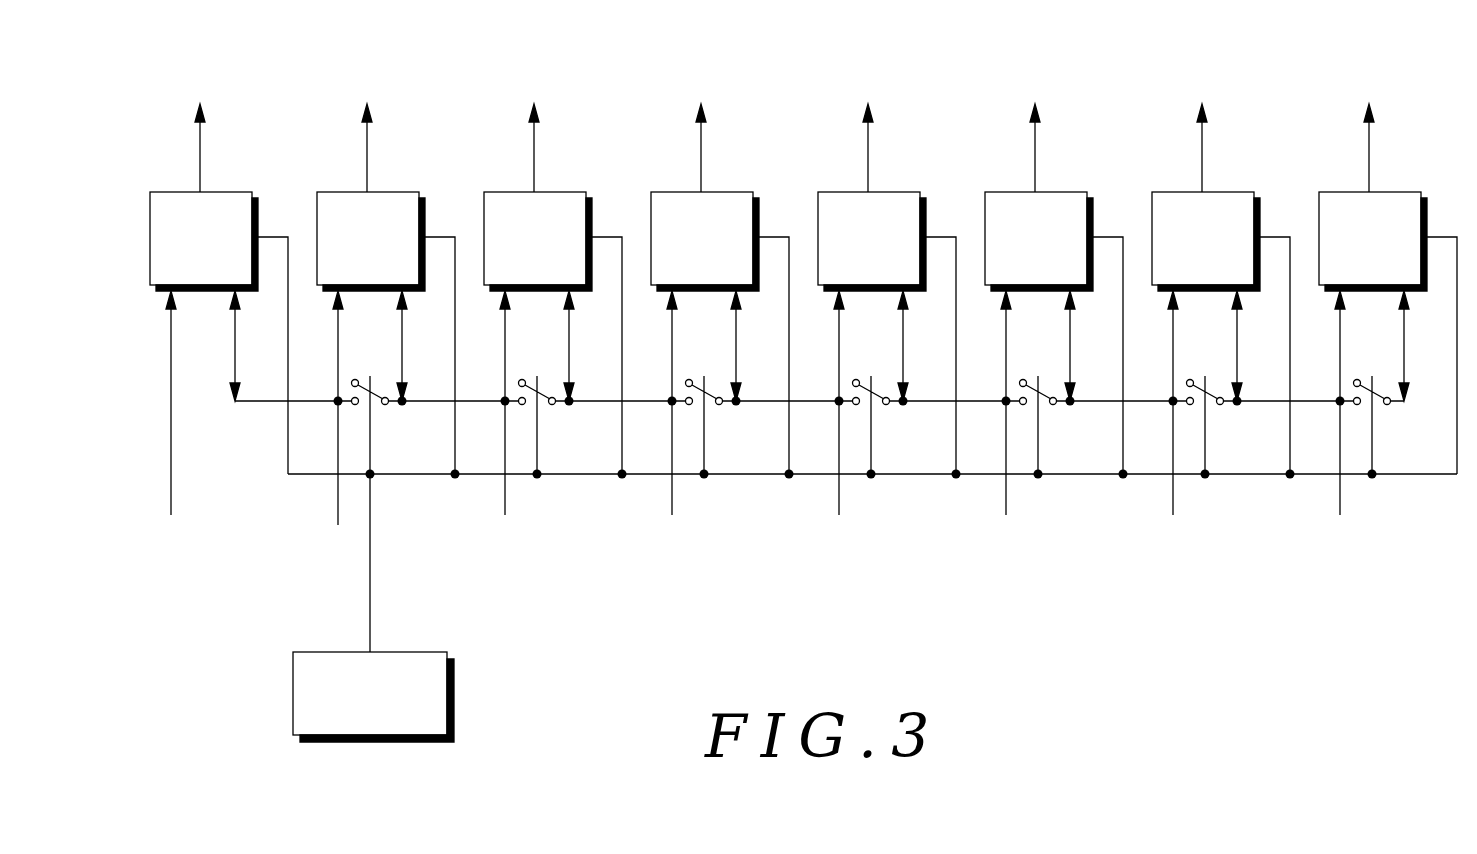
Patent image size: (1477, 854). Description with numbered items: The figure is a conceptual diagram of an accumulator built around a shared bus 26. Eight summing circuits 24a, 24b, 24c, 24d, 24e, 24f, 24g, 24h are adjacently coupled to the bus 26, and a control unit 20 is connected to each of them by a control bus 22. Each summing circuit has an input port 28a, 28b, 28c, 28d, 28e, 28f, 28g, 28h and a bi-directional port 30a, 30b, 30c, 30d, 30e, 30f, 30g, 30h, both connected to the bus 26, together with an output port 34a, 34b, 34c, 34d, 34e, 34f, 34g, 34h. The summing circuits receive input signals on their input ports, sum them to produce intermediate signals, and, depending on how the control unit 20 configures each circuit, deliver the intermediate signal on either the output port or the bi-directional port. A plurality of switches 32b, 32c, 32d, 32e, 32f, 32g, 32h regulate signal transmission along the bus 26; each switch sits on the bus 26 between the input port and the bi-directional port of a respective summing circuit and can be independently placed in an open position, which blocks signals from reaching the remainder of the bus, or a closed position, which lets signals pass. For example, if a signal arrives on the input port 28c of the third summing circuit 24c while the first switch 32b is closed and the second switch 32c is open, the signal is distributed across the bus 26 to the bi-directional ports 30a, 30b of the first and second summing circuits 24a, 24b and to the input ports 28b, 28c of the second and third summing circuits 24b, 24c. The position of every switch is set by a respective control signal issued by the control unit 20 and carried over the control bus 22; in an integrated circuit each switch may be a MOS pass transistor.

The control unit 20 is at (412, 652).
The control bus 22 is at (369, 607).
The summing circuit 24a is at (223, 190).
The summing circuit 24b is at (390, 190).
The summing circuit 24c is at (557, 190).
The summing circuit 24d is at (724, 190).
The summing circuit 24e is at (891, 190).
The summing circuit 24f is at (1058, 190).
The summing circuit 24g is at (1225, 190).
The summing circuit 24h is at (1392, 190).
The bus 26 is at (265, 403).
The input port 28a is at (174, 493).
The input port 28b is at (336, 506).
The input port 28c is at (503, 506).
The input port 28d is at (670, 506).
The input port 28e is at (837, 506).
The input port 28f is at (1004, 506).
The input port 28g is at (1171, 506).
The input port 28h is at (1338, 506).
The bi-directional port 30a is at (233, 352).
The bi-directional port 30b is at (400, 352).
The bi-directional port 30c is at (567, 352).
The bi-directional port 30d is at (734, 352).
The bi-directional port 30e is at (901, 352).
The bi-directional port 30f is at (1068, 352).
The bi-directional port 30g is at (1235, 352).
The bi-directional port 30h is at (1402, 352).
The switch 32b is at (379, 413).
The switch 32c is at (546, 413).
The switch 32d is at (713, 413).
The switch 32e is at (880, 413).
The switch 32f is at (1047, 413).
The switch 32g is at (1214, 413).
The switch 32h is at (1381, 413).
The output port 34a is at (198, 155).
The output port 34b is at (365, 155).
The output port 34c is at (532, 155).
The output port 34d is at (699, 155).
The output port 34e is at (866, 155).
The output port 34f is at (1033, 155).
The output port 34g is at (1200, 155).
The output port 34h is at (1367, 155).